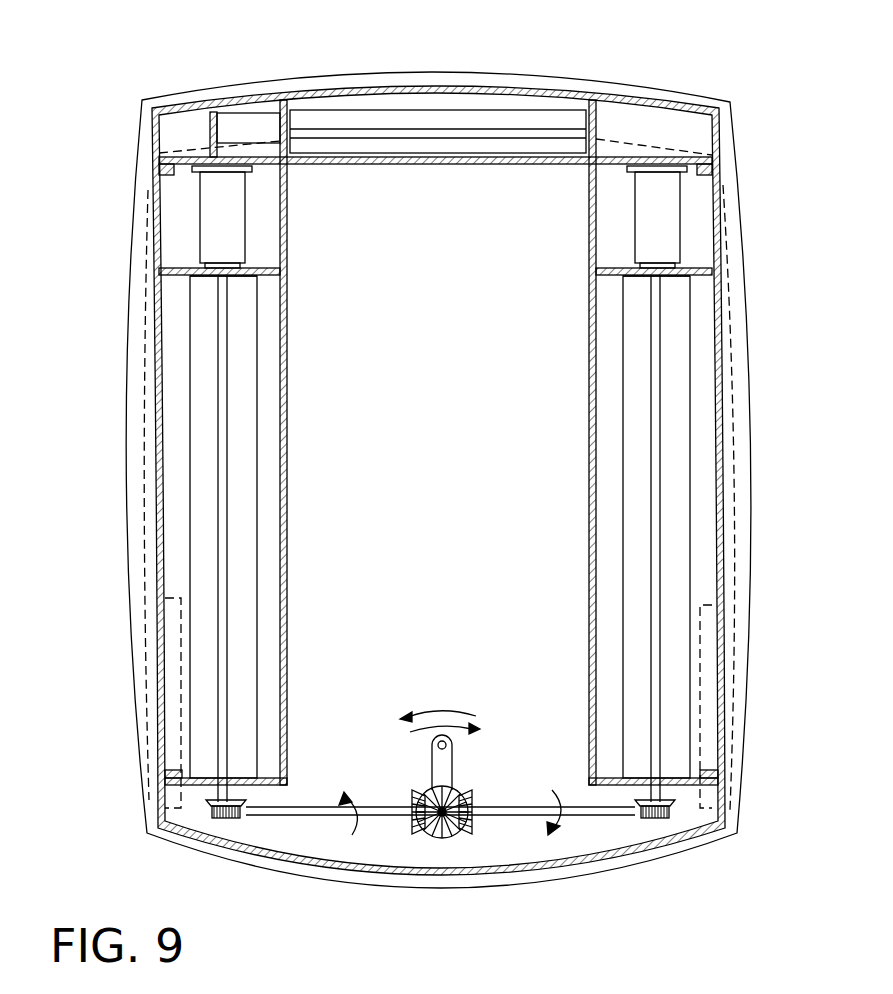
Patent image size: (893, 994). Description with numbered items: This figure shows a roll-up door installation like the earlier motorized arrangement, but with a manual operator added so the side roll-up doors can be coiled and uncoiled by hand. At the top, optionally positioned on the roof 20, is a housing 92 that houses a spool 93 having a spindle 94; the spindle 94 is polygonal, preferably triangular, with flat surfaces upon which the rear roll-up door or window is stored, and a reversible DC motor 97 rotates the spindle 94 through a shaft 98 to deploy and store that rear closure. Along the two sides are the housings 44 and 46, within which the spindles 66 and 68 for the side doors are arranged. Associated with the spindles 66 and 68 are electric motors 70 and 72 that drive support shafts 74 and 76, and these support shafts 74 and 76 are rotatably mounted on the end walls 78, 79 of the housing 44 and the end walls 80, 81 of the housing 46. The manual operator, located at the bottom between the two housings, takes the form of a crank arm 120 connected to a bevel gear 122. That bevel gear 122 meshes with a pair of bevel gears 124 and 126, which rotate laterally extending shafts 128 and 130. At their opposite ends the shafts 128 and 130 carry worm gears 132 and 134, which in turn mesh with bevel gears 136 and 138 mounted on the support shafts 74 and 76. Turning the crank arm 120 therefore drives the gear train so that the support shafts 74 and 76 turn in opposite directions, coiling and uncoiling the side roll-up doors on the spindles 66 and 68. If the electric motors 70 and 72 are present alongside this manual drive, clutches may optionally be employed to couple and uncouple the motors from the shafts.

The roof 20 is at (423, 633).
The housing 44 is at (292, 576).
The housing 46 is at (591, 526).
The spindle 66 is at (237, 470).
The spindle 68 is at (633, 385).
The electric motor 70 is at (215, 223).
The electric motor 72 is at (655, 213).
The support shaft 74 is at (222, 338).
The support shaft 76 is at (652, 468).
The end wall 78 is at (175, 277).
The end wall 80 is at (605, 277).
The end wall 79 is at (268, 779).
The end wall 81 is at (613, 783).
The housing 92 is at (485, 165).
The spool 93 is at (332, 128).
The spindle 94 is at (483, 120).
The reversible DC motor 97 is at (238, 130).
The shaft 98 is at (381, 132).
The crank arm 120 is at (442, 760).
The bevel gear 122 is at (425, 798).
The bevel gear 124 is at (435, 828).
The bevel gear 126 is at (475, 803).
The shaft 128 is at (328, 815).
The shaft 130 is at (573, 812).
The worm gear 132 is at (230, 818).
The worm gear 134 is at (655, 818).
The bevel gear 136 is at (240, 805).
The bevel gear 138 is at (677, 805).